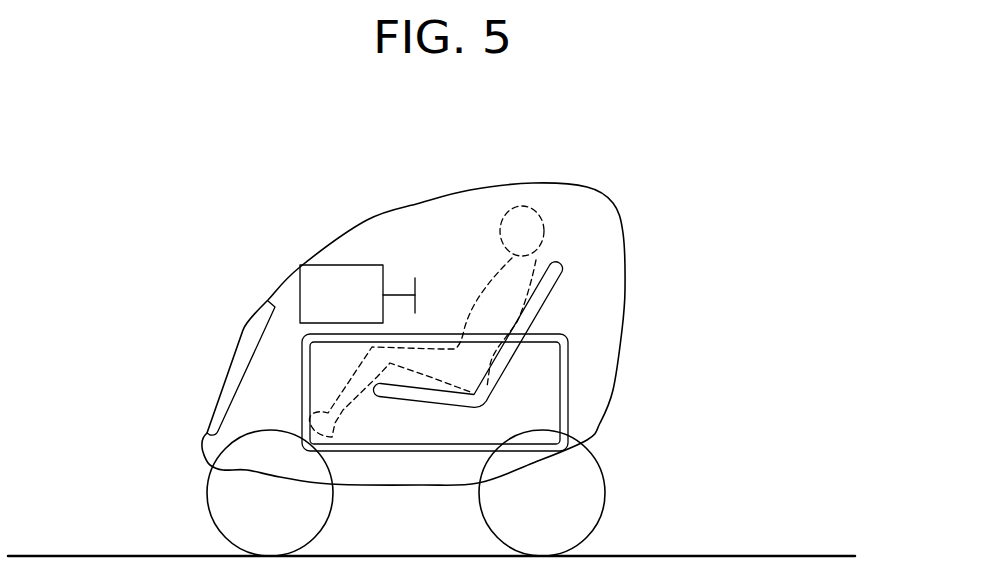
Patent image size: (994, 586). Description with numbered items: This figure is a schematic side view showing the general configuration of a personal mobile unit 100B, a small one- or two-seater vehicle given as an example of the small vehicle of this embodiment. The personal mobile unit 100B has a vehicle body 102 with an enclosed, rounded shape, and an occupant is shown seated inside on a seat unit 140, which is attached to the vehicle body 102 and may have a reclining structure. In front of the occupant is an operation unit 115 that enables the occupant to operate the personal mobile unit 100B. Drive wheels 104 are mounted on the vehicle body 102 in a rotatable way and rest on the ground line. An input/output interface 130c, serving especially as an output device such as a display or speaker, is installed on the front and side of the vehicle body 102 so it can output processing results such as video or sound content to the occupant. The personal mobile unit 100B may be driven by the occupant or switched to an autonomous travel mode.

The personal mobile unit 100B is at (510, 160).
The vehicle body 102 is at (365, 213).
The drive wheels 104 is at (207, 492).
The operation unit 115 is at (307, 293).
The input/output interface 130c is at (238, 358).
The seat unit 140 is at (540, 312).